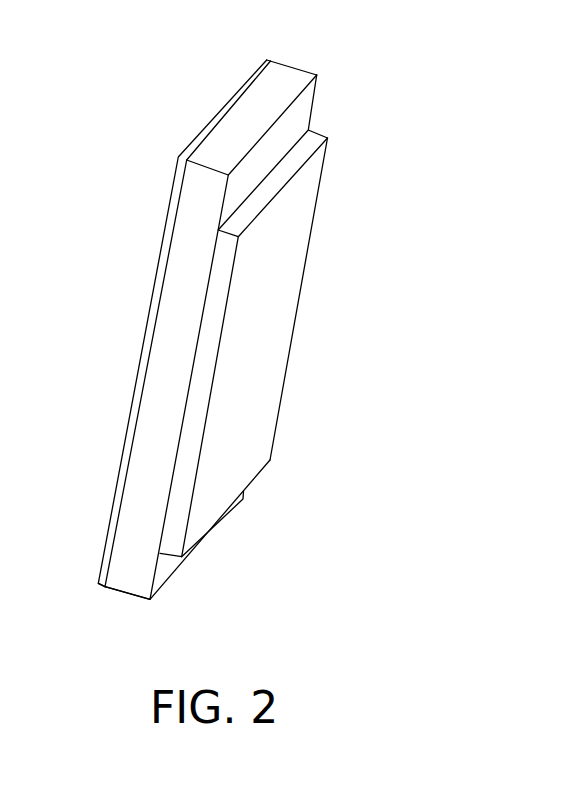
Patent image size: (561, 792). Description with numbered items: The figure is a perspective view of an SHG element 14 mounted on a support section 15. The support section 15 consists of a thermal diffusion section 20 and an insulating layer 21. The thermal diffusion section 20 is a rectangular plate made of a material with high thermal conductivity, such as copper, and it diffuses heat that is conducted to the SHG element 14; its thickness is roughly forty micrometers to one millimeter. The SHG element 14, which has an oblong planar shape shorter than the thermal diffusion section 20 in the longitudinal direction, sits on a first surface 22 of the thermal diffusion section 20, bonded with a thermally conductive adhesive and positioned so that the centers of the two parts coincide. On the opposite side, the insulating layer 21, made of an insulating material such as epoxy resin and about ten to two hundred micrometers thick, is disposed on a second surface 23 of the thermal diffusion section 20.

The SHG element 14 is at (310, 186).
The support section 15 is at (267, 47).
The thermal diffusion section 20 is at (128, 592).
The insulating layer 21 is at (98, 583).
The first surface 22 is at (167, 572).
The second surface 23 is at (222, 115).